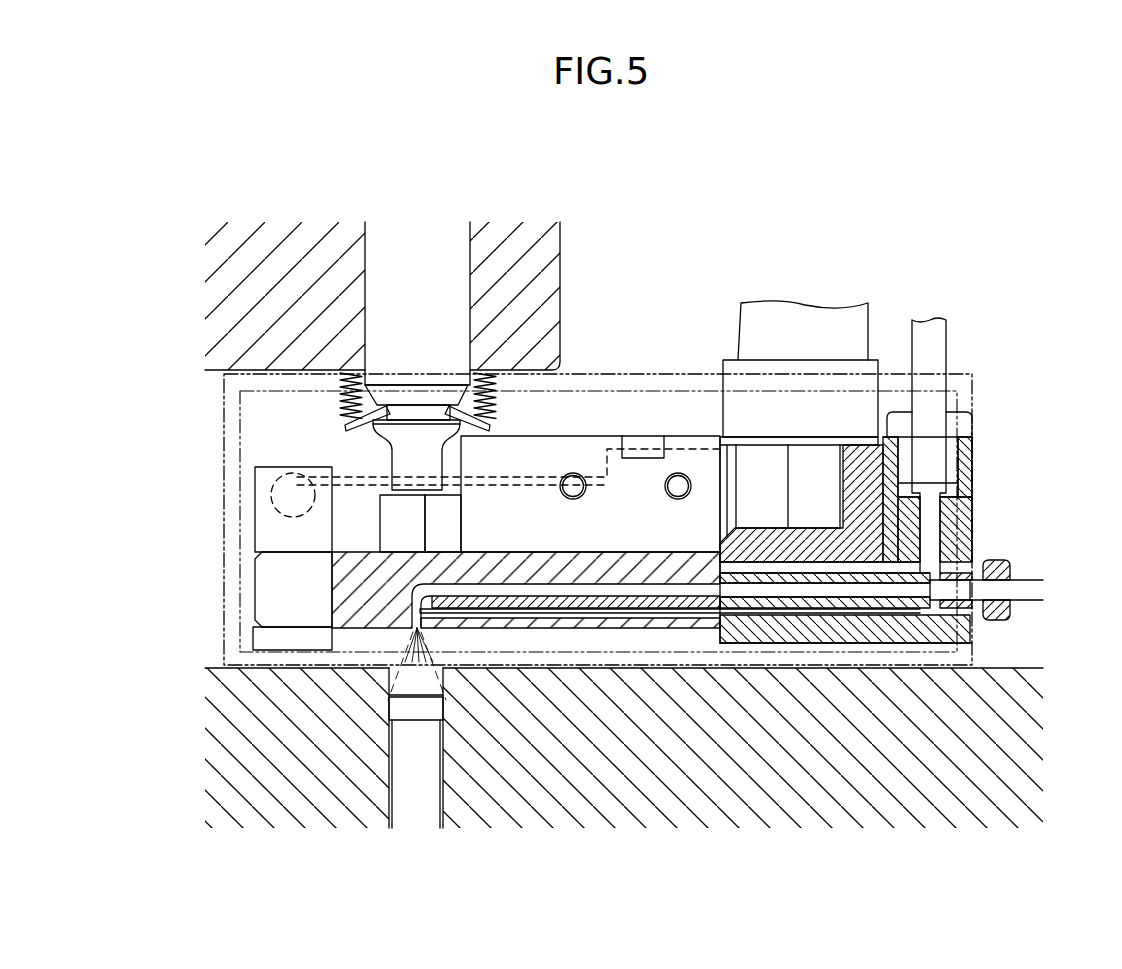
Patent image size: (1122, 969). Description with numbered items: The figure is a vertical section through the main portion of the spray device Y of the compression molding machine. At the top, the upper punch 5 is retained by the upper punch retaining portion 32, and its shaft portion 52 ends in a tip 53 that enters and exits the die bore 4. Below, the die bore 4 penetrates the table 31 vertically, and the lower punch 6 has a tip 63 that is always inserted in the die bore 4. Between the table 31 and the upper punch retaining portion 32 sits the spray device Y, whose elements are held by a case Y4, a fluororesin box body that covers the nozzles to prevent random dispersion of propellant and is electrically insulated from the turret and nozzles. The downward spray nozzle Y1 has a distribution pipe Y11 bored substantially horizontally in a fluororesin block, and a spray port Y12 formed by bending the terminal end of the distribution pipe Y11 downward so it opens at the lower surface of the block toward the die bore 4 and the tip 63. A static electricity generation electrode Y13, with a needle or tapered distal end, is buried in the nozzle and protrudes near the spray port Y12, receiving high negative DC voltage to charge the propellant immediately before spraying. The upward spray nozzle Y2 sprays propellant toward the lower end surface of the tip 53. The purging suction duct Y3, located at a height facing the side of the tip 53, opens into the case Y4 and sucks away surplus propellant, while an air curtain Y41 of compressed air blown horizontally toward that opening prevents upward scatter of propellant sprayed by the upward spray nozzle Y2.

The upper punch 5 is at (415, 222).
The shaft portion 52 is at (402, 300).
The upper punch retaining portion 32 is at (560, 288).
The tip 53 is at (393, 458).
The spray device Y is at (220, 515).
The downward spray nozzle Y1 is at (333, 590).
The upward spray nozzle Y2 is at (380, 520).
The purging suction duct Y3 is at (805, 335).
The case Y4 is at (666, 374).
The distribution pipe Y11 is at (597, 552).
The spray port Y12 is at (410, 628).
The static electricity generation electrode Y13 is at (557, 615).
The air curtain Y41 is at (292, 473).
The tip 63 is at (388, 707).
The die bore 4 is at (443, 750).
The table 31 is at (1043, 750).
The lower punch 6 is at (418, 830).